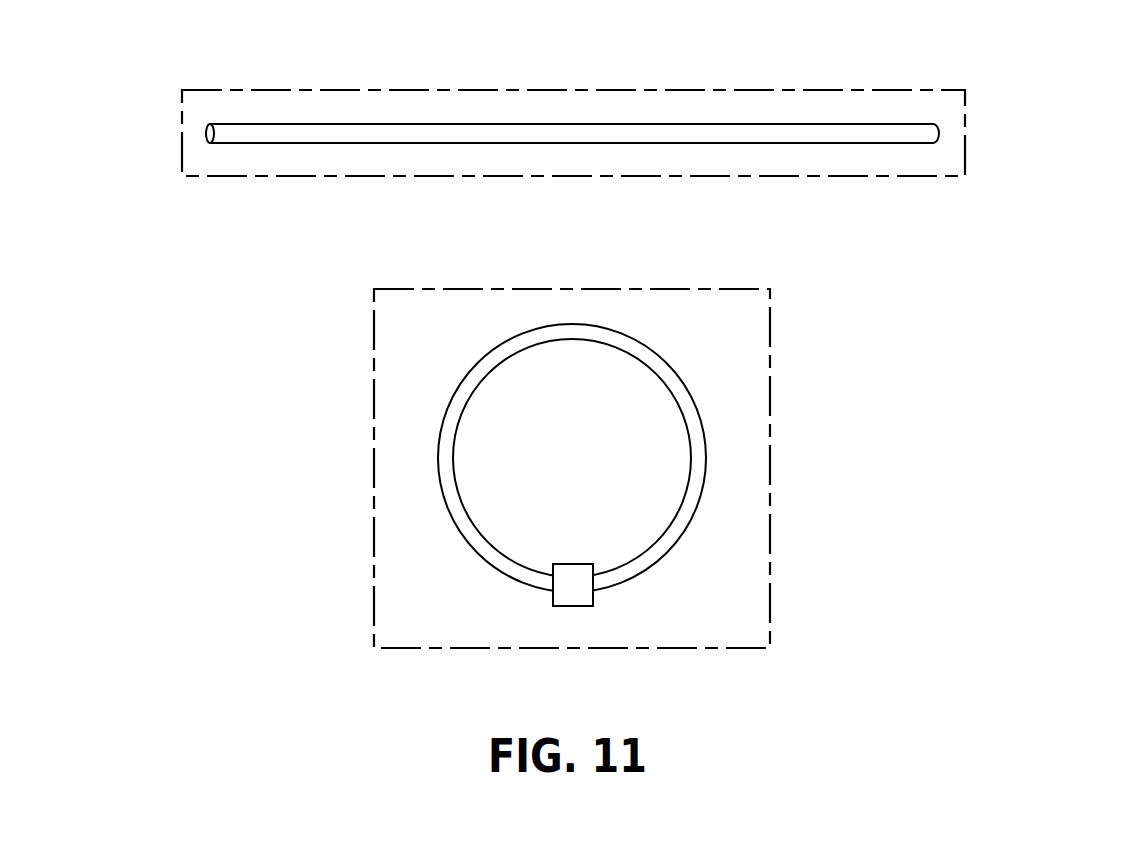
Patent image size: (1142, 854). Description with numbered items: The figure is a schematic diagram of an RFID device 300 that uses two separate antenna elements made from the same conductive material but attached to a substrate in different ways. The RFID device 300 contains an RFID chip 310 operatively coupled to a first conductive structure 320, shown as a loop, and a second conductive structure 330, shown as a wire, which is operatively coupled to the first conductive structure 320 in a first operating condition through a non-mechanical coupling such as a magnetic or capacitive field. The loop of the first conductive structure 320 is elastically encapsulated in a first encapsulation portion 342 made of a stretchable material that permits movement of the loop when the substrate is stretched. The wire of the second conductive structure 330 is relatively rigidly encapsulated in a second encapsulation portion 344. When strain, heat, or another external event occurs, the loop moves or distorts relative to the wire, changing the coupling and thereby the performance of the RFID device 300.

The RFID device 300 is at (1042, 243).
The RFID chip 310 is at (579, 594).
The first conductive structure 320 is at (690, 466).
The second conductive structure 330 is at (858, 124).
The first encapsulation portion 342 is at (745, 319).
The second encapsulation portion 344 is at (900, 159).